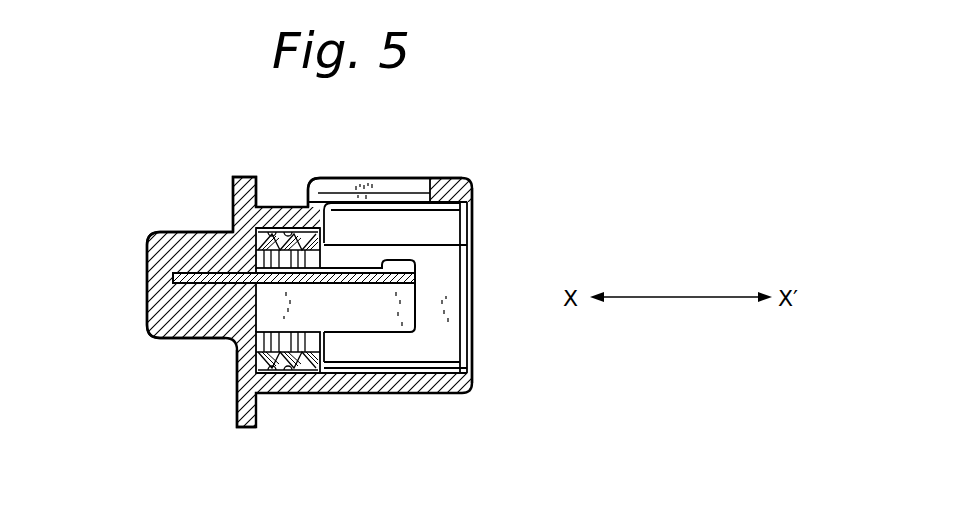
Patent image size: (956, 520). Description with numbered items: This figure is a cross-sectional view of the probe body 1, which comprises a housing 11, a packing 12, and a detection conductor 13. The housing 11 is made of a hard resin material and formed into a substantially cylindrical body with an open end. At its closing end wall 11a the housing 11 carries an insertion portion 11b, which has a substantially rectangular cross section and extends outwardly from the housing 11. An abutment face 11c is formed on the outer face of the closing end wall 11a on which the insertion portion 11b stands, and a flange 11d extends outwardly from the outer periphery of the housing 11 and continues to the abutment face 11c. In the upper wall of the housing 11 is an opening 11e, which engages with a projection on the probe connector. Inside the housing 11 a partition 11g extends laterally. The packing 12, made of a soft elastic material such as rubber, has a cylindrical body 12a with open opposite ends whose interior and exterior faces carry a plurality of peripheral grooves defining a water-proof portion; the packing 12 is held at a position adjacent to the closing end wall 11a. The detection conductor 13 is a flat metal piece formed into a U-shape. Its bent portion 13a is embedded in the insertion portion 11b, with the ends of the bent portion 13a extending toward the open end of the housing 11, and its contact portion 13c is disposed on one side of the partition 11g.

The probe body 1 is at (480, 186).
The housing 11 is at (409, 396).
The closing end wall 11a is at (237, 362).
The insertion portion 11b is at (190, 232).
The abutment face 11c is at (233, 218).
The flange 11d is at (237, 412).
The opening 11e is at (347, 178).
The partition 11g is at (412, 338).
The packing 12 is at (308, 350).
The cylindrical body 12a is at (280, 228).
The detection conductor 13 is at (147, 313).
The bent portion 13a is at (174, 287).
The contact portion 13c is at (302, 290).